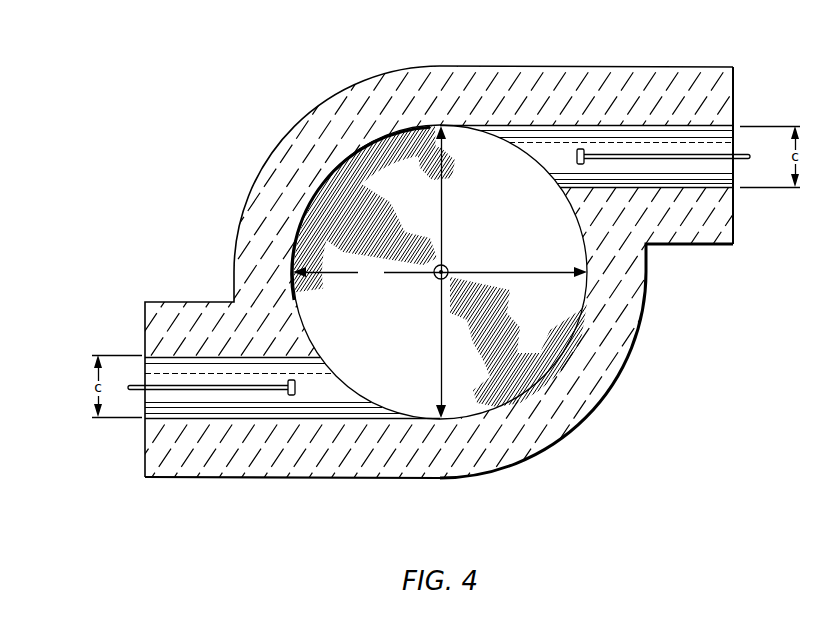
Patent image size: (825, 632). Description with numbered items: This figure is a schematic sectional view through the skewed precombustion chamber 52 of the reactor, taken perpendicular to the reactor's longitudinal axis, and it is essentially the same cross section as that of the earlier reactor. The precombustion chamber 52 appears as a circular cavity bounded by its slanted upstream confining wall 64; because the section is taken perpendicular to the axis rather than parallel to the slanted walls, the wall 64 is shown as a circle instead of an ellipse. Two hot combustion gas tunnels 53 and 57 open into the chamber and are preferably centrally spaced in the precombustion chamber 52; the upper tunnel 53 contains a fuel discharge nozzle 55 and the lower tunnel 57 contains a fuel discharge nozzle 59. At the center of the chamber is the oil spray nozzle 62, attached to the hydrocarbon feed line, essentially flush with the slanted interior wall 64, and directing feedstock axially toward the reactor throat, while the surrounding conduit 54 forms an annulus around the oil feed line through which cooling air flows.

The precombustion chamber 52 is at (530, 260).
The hot combustion gas tunnel 53 is at (670, 126).
The conduit 54 is at (437, 264).
The fuel discharge nozzle 55 is at (583, 166).
The hot combustion gas tunnel 57 is at (319, 358).
The fuel discharge nozzle 59 is at (296, 385).
The oil spray nozzle 62 is at (442, 280).
The upstream confining wall 64 is at (491, 207).